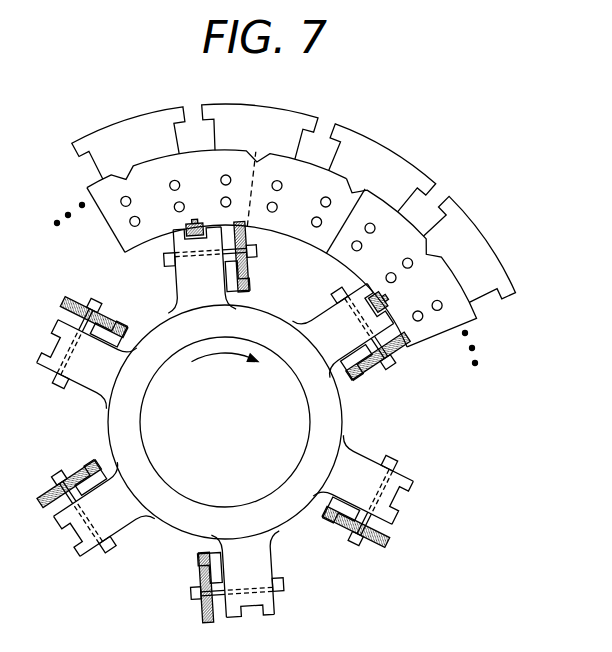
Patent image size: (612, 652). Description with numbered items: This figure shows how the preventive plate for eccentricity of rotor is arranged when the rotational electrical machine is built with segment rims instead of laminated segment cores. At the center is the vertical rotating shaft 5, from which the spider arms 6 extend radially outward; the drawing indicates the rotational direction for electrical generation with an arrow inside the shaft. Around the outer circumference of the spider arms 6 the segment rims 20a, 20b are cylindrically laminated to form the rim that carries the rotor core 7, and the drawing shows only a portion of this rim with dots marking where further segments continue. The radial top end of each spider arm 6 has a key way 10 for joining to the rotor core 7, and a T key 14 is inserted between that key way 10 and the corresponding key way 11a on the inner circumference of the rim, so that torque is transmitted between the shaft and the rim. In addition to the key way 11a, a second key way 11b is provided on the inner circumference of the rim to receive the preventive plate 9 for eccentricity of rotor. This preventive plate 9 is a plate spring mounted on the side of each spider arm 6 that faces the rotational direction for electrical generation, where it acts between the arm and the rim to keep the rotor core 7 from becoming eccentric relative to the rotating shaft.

The vertical rotating shaft 5 is at (328, 398).
The spider arm 6 is at (362, 372).
The rotor core 7 is at (476, 251).
The preventive plate for eccentricity of rotor 9 is at (393, 360).
The key way 10 is at (404, 504).
The key way 11a is at (398, 300).
The key way 11b is at (408, 337).
The T key 14 is at (343, 304).
The segment rim 20a is at (463, 312).
The segment rim 20b is at (104, 197).